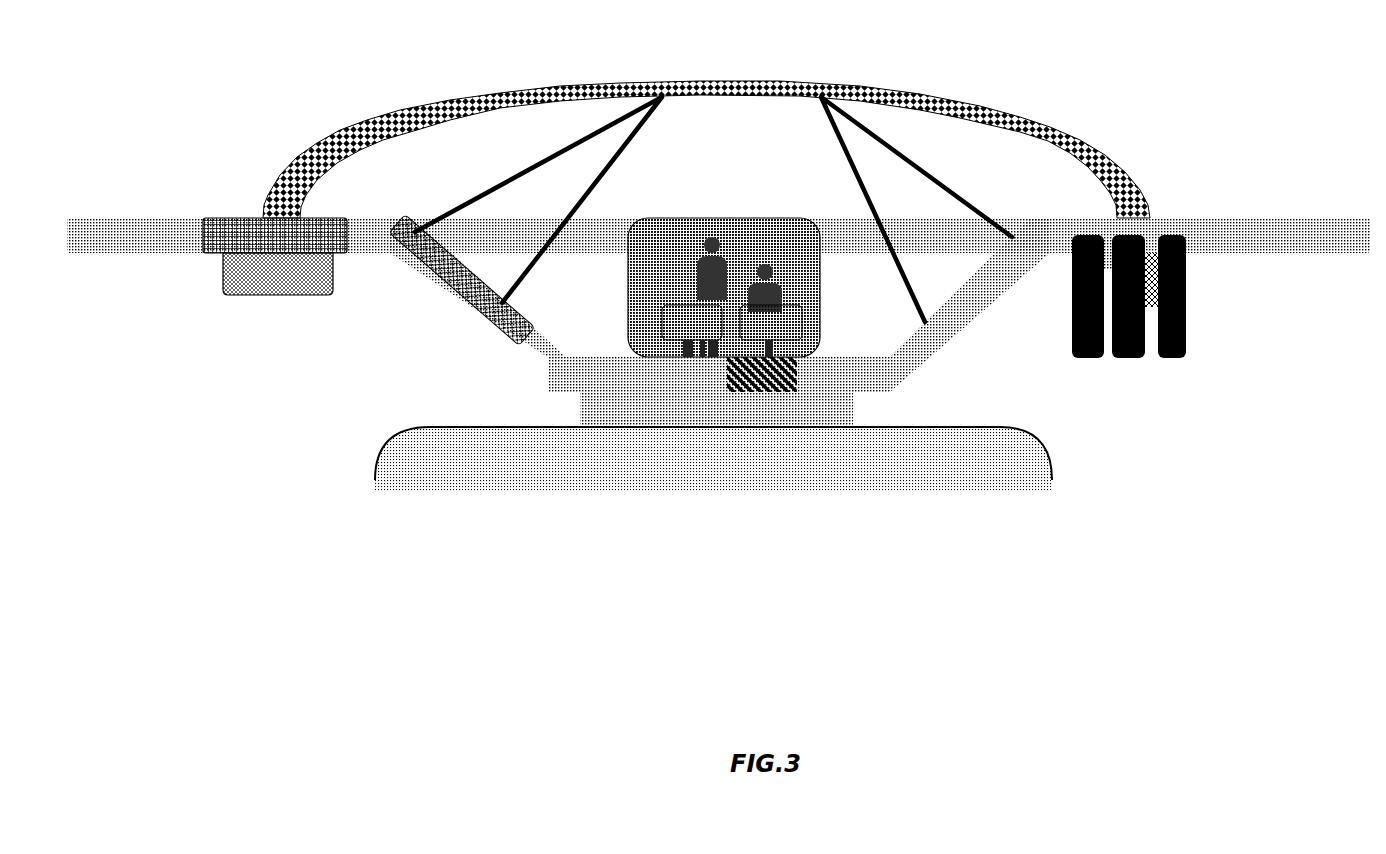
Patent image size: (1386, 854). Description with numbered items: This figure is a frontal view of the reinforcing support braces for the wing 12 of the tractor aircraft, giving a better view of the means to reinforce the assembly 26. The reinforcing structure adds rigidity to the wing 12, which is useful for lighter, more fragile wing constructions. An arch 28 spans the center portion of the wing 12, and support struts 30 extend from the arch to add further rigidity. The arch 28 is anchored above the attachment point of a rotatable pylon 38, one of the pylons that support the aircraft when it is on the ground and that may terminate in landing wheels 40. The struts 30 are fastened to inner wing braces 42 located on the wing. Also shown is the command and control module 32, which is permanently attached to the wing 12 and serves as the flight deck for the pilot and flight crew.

The wing 12 is at (1342, 252).
The reinforcing assembly 26 is at (706, 173).
The arch 28 is at (412, 117).
The support struts 30 is at (522, 173).
The command and control module 32 is at (730, 218).
The rotatable pylon 38 is at (232, 297).
The landing wheels 40 is at (1185, 333).
The inner wing brace 42 is at (463, 273).